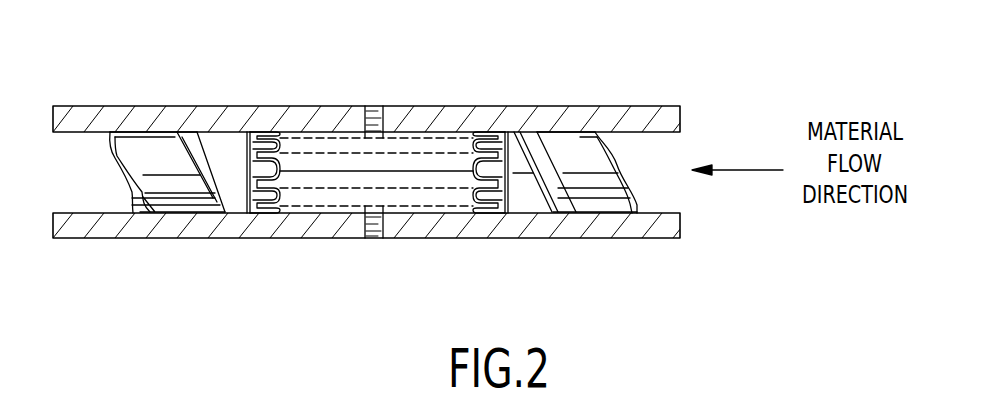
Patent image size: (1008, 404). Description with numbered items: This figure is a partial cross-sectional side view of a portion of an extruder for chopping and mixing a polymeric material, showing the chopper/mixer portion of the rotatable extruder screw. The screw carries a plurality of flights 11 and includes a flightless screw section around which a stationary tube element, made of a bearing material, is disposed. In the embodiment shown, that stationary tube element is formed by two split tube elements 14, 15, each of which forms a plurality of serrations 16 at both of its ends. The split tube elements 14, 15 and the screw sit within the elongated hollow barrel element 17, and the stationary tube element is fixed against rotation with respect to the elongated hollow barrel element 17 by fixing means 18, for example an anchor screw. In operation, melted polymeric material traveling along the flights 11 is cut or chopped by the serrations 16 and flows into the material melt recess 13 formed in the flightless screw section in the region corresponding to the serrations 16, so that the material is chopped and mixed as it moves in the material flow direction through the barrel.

The flights 11 is at (550, 162).
The material melt recess 13 is at (297, 178).
The split tube element 14 is at (310, 108).
The split tube element 15 is at (432, 205).
The serrations 16 is at (517, 207).
The elongated hollow barrel element 17 is at (465, 107).
The fixing means 18 is at (377, 107).